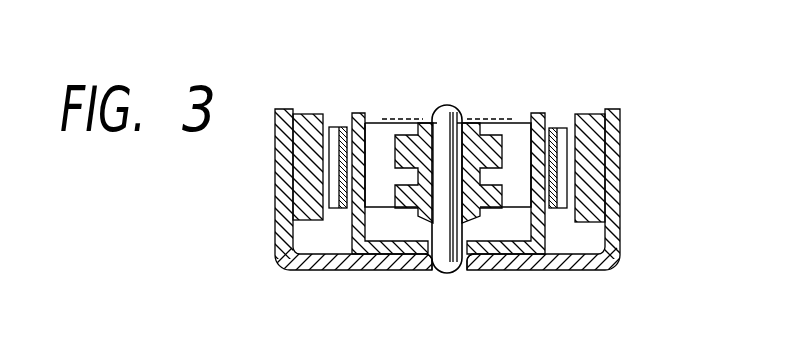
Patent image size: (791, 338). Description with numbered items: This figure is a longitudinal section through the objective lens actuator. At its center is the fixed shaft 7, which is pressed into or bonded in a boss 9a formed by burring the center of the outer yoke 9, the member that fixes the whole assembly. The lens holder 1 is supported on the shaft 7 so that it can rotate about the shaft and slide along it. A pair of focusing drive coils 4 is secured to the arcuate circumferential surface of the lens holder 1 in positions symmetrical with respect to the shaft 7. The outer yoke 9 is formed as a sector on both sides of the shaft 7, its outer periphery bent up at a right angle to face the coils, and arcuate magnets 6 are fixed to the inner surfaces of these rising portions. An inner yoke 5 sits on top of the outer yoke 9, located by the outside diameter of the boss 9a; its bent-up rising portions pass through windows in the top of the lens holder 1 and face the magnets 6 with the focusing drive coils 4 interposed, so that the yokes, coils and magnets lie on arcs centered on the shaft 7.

The lens holder 1 is at (383, 142).
The focusing drive coils 4 is at (555, 130).
The inner yoke 5 is at (540, 121).
The arcuate magnets 6 is at (590, 121).
The fixed shaft 7 is at (447, 113).
The outer yoke 9 is at (617, 148).
The boss 9a is at (466, 262).